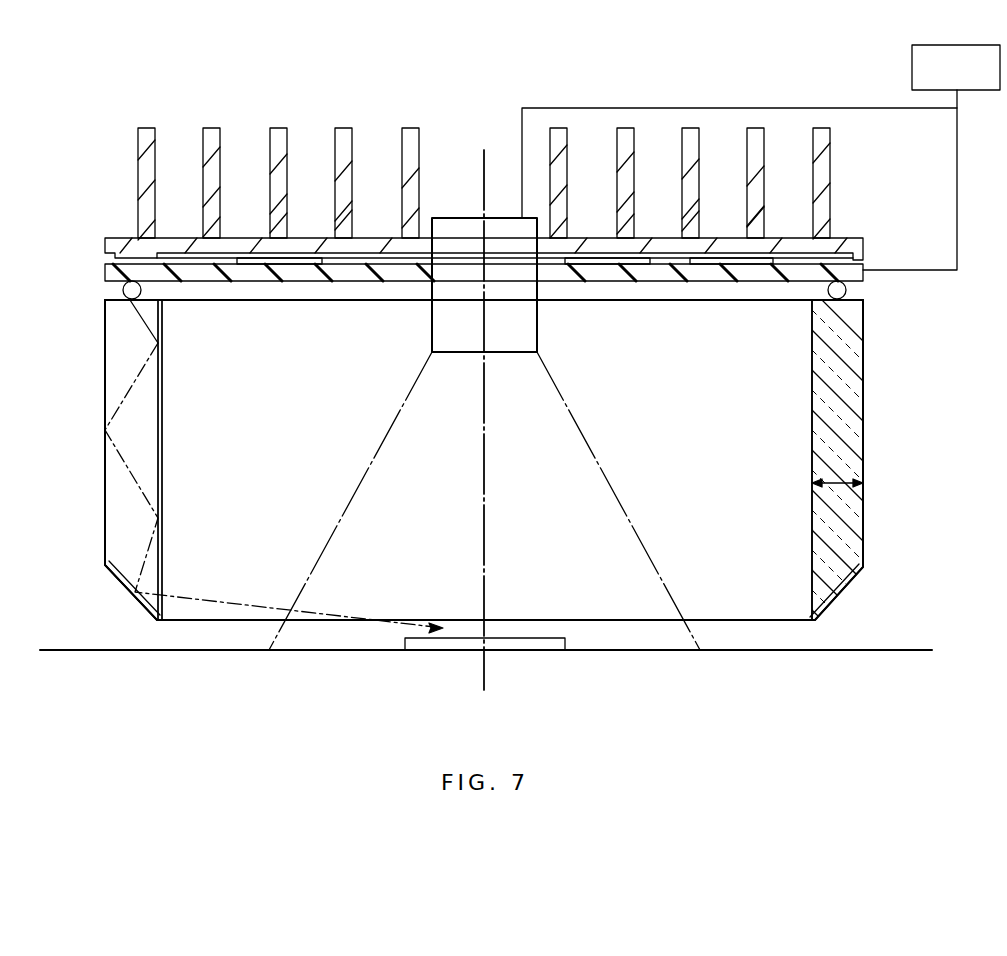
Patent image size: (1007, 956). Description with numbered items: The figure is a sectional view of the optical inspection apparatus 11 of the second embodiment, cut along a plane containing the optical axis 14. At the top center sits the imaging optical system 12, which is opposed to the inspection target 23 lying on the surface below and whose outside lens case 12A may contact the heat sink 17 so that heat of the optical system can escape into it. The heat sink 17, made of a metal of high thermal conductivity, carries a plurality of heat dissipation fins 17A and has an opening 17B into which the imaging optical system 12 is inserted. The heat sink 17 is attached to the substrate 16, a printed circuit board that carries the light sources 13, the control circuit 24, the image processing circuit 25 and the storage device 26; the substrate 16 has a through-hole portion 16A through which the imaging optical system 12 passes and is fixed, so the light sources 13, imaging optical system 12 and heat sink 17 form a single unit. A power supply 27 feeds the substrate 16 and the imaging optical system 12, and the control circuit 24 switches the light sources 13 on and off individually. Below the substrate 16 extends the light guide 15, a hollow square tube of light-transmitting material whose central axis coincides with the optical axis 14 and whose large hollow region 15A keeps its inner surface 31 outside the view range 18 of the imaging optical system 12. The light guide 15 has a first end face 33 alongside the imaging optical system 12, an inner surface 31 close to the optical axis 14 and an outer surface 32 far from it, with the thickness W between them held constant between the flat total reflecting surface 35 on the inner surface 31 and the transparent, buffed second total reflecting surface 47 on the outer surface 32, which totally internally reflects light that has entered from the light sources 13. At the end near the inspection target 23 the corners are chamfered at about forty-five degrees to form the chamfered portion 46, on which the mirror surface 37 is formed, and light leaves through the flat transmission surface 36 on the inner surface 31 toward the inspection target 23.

The optical inspection apparatus 11 is at (569, 72).
The imaging optical system 12 is at (470, 218).
The outside lens case 12A is at (507, 218).
The light sources 13 is at (123, 290).
The optical axis 14 is at (487, 497).
The light guide 15 is at (888, 371).
The hollow region 15A is at (680, 446).
The substrate 16 is at (863, 258).
The through-hole portion 16A is at (540, 272).
The heat sink 17 is at (111, 132).
The heat dissipation fins 17A is at (212, 128).
The opening 17B is at (420, 237).
The view range 18 is at (584, 448).
The inspection target 23 is at (538, 638).
The control circuit 24 is at (280, 264).
The image processing circuit 25 is at (645, 264).
The storage device 26 is at (752, 264).
The power supply 27 is at (912, 68).
The inner surface 31 is at (794, 446).
The outer surface 32 is at (881, 472).
The first end face 33 is at (128, 302).
The total reflecting surface 35 is at (168, 300).
The transmission surface 36 is at (179, 604).
The mirror surface 37 is at (136, 598).
The chamfered portion 46 is at (489, 603).
The second total reflecting surface 47 is at (97, 302).
The thickness W is at (838, 484).